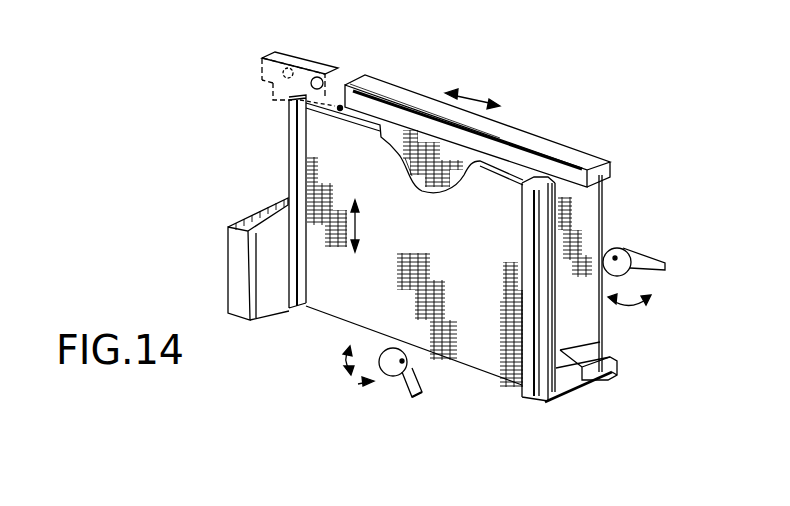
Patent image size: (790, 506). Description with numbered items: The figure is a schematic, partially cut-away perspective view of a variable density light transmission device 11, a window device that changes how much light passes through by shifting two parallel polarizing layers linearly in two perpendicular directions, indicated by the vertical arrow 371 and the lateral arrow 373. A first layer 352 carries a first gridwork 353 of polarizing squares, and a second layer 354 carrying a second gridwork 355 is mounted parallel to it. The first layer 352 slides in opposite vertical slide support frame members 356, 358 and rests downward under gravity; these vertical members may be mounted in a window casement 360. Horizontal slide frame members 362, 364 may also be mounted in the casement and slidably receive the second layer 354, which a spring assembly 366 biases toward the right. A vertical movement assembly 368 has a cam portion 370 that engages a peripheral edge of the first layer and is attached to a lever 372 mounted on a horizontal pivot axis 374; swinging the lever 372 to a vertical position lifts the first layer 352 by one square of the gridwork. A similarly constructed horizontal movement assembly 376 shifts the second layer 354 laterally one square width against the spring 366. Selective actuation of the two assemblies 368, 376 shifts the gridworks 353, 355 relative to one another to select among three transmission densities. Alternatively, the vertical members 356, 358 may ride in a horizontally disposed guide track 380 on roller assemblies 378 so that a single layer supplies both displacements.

The variable density light transmission device 11 is at (583, 106).
The first layer 352 is at (334, 135).
The first gridwork 353 is at (397, 272).
The second layer 354 is at (582, 200).
The second gridwork 355 is at (417, 183).
The vertical slide support frame member 356 is at (290, 172).
The vertical slide support frame member 358 is at (547, 392).
The window casement 360 is at (235, 251).
The horizontal slide frame member 362 is at (383, 90).
The horizontal slide frame member 364 is at (620, 360).
The spring assembly 366 is at (339, 104).
The vertical movement assembly 368 is at (360, 384).
The cam portion 370 is at (345, 360).
The vertical linear movement direction 371 is at (358, 224).
The lever 372 is at (400, 396).
The horizontal linear movement direction 373 is at (492, 100).
The horizontal pivot axis 374 is at (413, 365).
The horizontal movement assembly 376 is at (641, 247).
The roller assembly 378 is at (267, 75).
The horizontally disposed guide track 380 is at (265, 55).